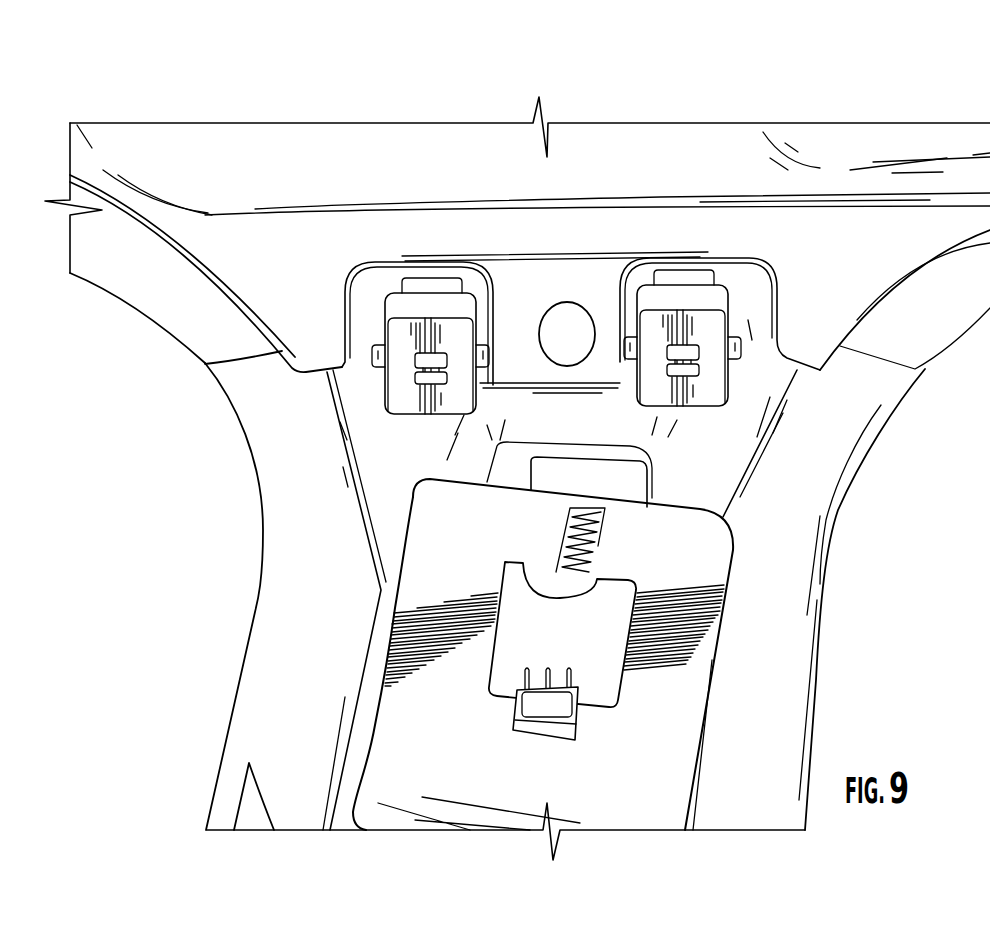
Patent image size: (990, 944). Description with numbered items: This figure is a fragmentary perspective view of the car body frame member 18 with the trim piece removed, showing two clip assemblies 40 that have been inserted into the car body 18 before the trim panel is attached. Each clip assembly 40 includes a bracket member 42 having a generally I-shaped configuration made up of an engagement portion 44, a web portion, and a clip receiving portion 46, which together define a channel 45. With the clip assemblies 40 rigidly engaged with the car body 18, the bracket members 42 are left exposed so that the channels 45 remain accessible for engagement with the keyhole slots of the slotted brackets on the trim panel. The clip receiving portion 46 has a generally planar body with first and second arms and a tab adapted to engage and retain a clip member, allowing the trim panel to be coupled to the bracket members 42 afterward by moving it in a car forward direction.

The car body frame member 18 is at (571, 238).
The clip assembly 40 is at (560, 310).
The bracket member 42 is at (398, 402).
The engagement portion 44 is at (465, 340).
The channel 45 is at (404, 300).
The clip receiving portion 46 is at (460, 302).